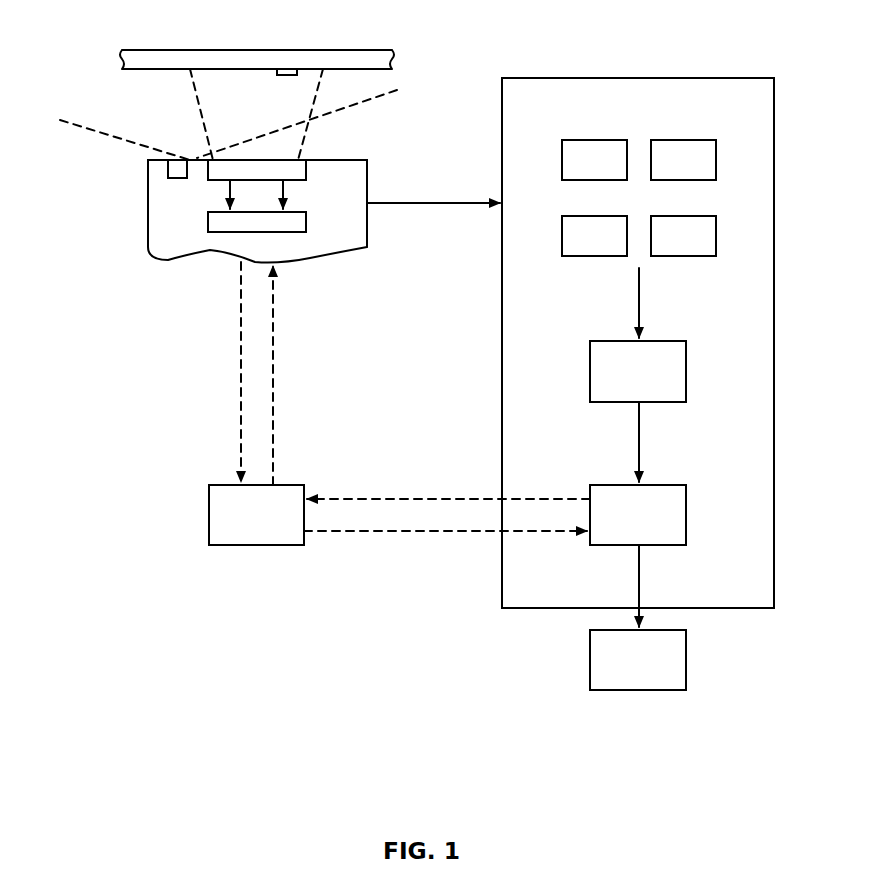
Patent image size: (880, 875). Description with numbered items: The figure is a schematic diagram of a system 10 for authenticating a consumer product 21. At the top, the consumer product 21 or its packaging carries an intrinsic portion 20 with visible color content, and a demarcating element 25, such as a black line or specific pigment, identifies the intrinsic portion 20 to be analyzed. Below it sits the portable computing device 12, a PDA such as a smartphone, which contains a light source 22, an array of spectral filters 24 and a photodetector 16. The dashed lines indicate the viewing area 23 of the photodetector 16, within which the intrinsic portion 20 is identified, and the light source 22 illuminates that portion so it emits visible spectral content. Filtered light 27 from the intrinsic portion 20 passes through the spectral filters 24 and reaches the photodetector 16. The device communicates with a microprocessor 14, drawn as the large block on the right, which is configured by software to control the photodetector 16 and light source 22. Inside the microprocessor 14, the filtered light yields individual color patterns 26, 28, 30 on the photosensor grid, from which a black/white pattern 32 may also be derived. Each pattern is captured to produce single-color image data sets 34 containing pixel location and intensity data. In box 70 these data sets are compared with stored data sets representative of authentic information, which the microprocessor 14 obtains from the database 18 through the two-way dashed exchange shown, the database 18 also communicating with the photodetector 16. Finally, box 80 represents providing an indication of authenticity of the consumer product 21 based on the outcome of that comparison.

The system 10 is at (425, 30).
The portable computing device 12 is at (348, 255).
The microprocessor 14 is at (736, 78).
The photodetector 16 is at (226, 245).
The database 18 is at (222, 484).
The intrinsic portion 20 is at (164, 73).
The consumer product 21 is at (160, 48).
The light source 22 is at (168, 170).
The viewing area 23 is at (315, 100).
The spectral filters 24 is at (306, 172).
The demarcating element 25 is at (283, 78).
The pattern 26 is at (578, 140).
The filtered light 27 is at (225, 194).
The pattern 28 is at (700, 140).
The pattern 30 is at (578, 216).
The black/white pattern 32 is at (700, 216).
The single-color image data sets 34 is at (672, 341).
The comparison box 70 is at (672, 485).
The indication of authenticity box 80 is at (672, 690).